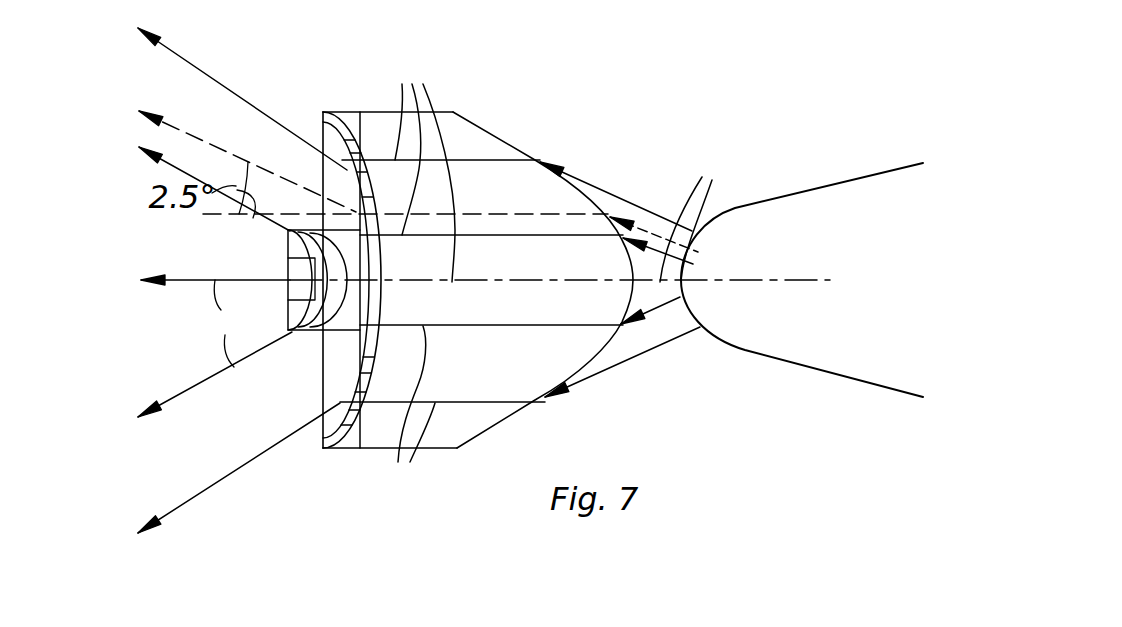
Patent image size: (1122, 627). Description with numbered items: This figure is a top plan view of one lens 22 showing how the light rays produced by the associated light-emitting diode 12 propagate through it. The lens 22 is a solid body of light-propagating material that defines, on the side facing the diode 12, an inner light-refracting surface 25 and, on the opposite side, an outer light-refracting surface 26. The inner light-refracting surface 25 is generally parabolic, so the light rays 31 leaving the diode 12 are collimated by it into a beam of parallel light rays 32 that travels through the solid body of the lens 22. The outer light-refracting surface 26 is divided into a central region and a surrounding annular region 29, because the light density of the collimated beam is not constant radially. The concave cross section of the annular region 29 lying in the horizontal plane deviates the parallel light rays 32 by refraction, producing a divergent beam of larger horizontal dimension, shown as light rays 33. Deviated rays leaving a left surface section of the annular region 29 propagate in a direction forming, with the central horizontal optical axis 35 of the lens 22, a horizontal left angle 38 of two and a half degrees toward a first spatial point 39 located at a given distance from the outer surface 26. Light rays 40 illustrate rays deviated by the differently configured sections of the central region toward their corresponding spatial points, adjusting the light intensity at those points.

The light-emitting diode 12 is at (838, 198).
The lens 22 is at (490, 133).
The inner light-refracting surface 25 is at (597, 192).
The outer light-refracting surface 26 is at (345, 360).
The annular region 29 is at (323, 156).
The light rays 31 is at (702, 177).
The parallel light rays 32 is at (414, 278).
The light rays 33 is at (247, 98).
The central horizontal optical axis 35 is at (807, 281).
The horizontal left angle 38 is at (243, 296).
The first spatial point 39 is at (143, 110).
The light rays 40 is at (215, 348).